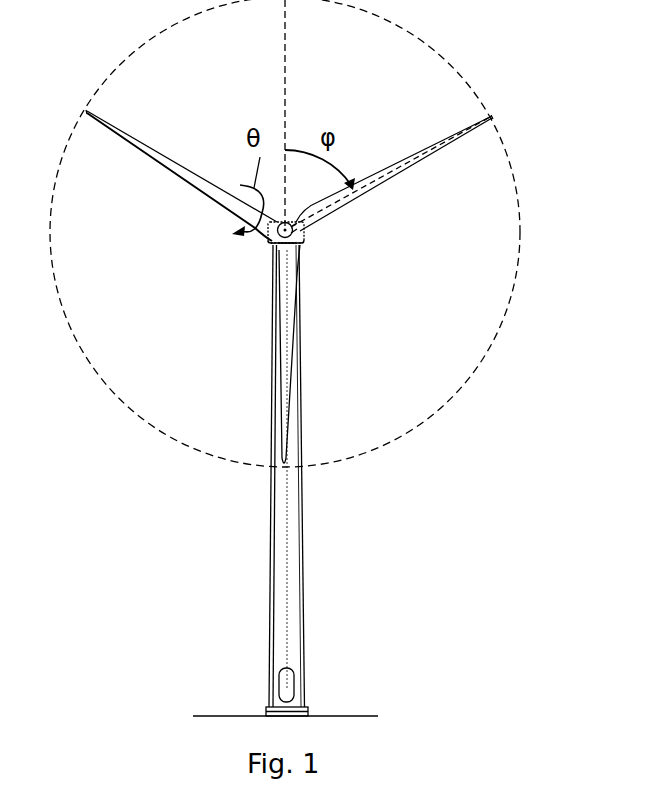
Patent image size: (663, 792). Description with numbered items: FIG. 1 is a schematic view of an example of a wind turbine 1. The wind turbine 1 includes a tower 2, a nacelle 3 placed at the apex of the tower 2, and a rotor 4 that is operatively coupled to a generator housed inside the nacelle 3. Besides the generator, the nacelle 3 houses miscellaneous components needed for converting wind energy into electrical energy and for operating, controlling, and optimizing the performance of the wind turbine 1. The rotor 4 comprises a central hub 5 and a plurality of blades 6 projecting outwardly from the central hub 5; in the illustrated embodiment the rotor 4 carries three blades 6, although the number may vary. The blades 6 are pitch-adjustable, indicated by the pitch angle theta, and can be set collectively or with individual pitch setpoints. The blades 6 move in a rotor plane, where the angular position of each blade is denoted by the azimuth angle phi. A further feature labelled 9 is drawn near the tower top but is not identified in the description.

The wind turbine 1 is at (506, 55).
The tower 2 is at (290, 503).
The nacelle 3 is at (270, 245).
The rotor 4 is at (315, 276).
The central hub 5 is at (303, 244).
The blades 6 is at (412, 160).
The yaw system 9 is at (278, 246).